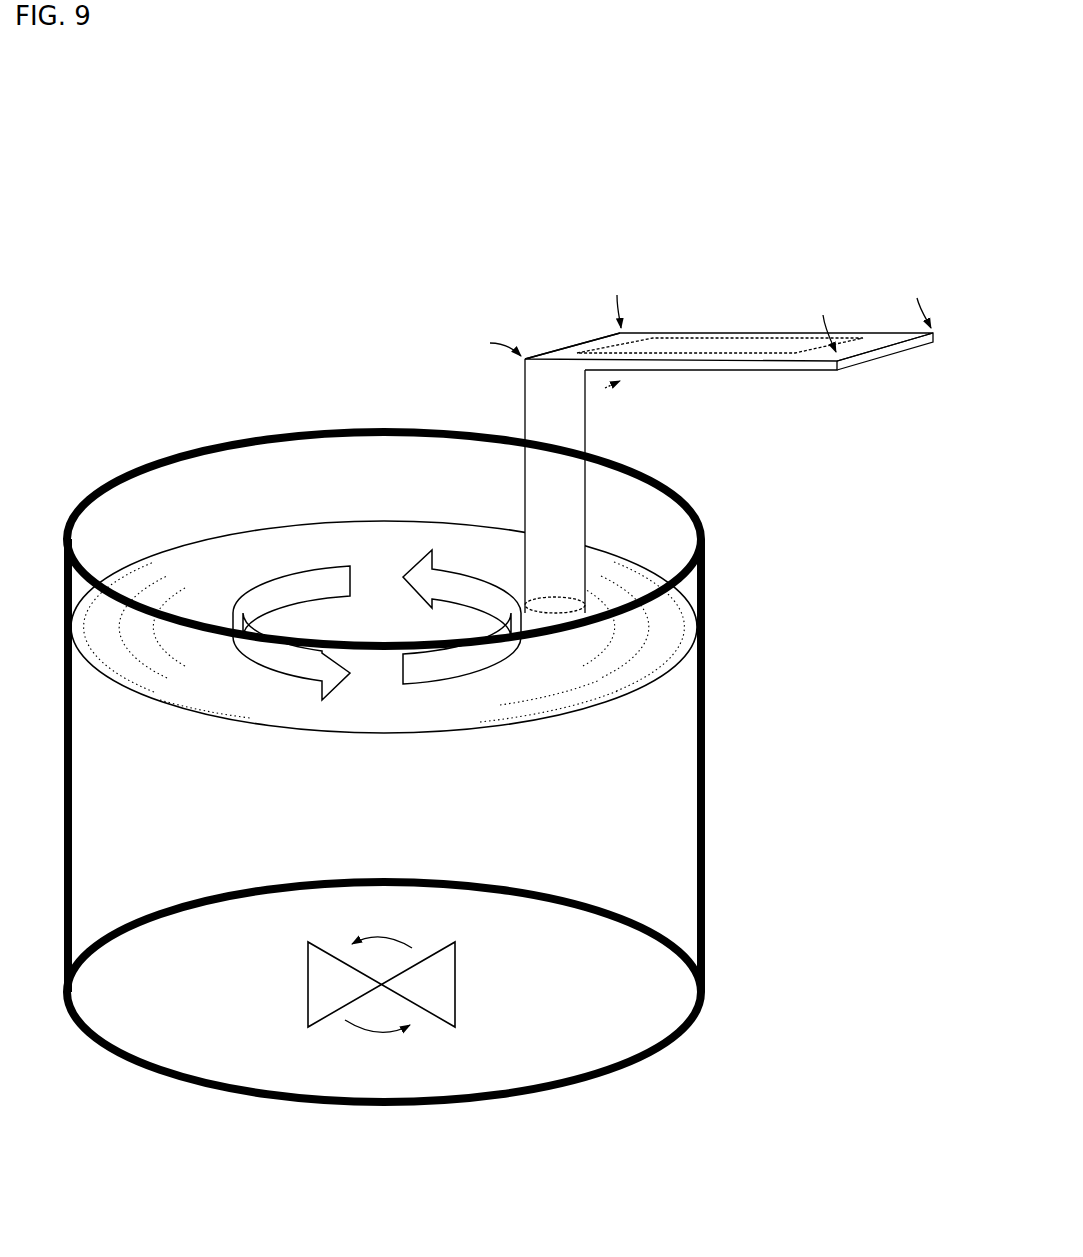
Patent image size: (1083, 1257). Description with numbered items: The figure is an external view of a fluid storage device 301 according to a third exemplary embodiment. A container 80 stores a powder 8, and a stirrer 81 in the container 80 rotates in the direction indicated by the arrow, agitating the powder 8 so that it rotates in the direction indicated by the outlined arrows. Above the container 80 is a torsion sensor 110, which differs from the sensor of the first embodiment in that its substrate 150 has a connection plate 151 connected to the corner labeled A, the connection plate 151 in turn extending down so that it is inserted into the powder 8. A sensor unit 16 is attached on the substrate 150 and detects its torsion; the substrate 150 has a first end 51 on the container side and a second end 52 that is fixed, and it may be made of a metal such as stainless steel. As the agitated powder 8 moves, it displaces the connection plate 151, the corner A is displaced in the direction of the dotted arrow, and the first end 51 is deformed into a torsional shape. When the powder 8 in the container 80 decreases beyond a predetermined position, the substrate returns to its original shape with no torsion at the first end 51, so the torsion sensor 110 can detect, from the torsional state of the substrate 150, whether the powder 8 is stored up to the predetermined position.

The fluid storage device 301 is at (773, 131).
The first end 51 is at (593, 347).
The sensor unit 16 is at (667, 345).
The torsion sensor 110 is at (729, 335).
The substrate 150 is at (740, 372).
The connection plate 151 is at (570, 403).
The second end 52 is at (863, 347).
The container 80 is at (130, 468).
The powder 8 is at (203, 555).
The stirrer 81 is at (312, 1007).